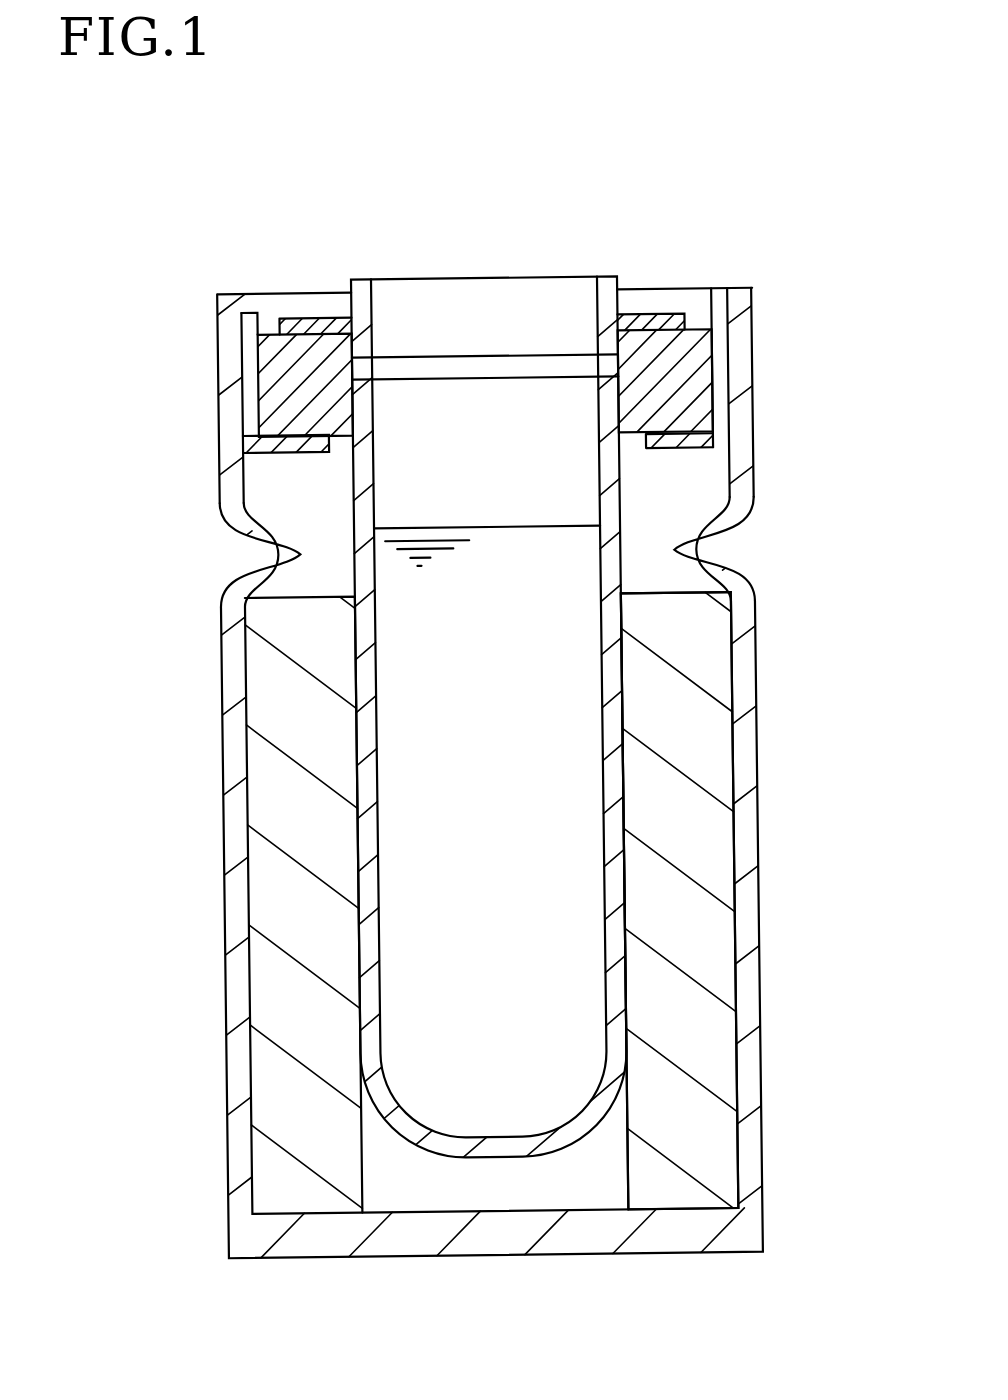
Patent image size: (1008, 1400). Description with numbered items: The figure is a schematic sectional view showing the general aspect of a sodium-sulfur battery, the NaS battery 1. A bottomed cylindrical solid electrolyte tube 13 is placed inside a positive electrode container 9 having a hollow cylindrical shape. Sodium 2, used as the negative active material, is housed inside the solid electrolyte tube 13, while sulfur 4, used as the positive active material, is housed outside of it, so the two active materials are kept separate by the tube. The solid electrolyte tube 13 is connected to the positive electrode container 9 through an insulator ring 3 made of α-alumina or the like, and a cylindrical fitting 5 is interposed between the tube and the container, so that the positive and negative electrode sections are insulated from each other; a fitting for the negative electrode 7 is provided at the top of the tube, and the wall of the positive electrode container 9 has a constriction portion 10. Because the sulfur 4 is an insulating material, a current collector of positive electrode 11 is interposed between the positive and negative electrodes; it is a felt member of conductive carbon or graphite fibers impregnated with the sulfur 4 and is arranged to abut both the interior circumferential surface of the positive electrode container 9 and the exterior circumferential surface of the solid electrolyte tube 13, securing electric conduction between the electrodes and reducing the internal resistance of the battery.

The NaS battery 1 is at (740, 211).
The sodium 2 is at (414, 881).
The insulator ring 3 is at (696, 406).
The sulfur 4 is at (704, 980).
The cylindrical fitting 5 is at (722, 358).
The fitting for the negative electrode 7 is at (614, 281).
The positive electrode container 9 is at (759, 688).
The constriction portion 10 is at (693, 552).
The current collector of positive electrode 11 is at (700, 910).
The solid electrolyte tube 13 is at (614, 568).